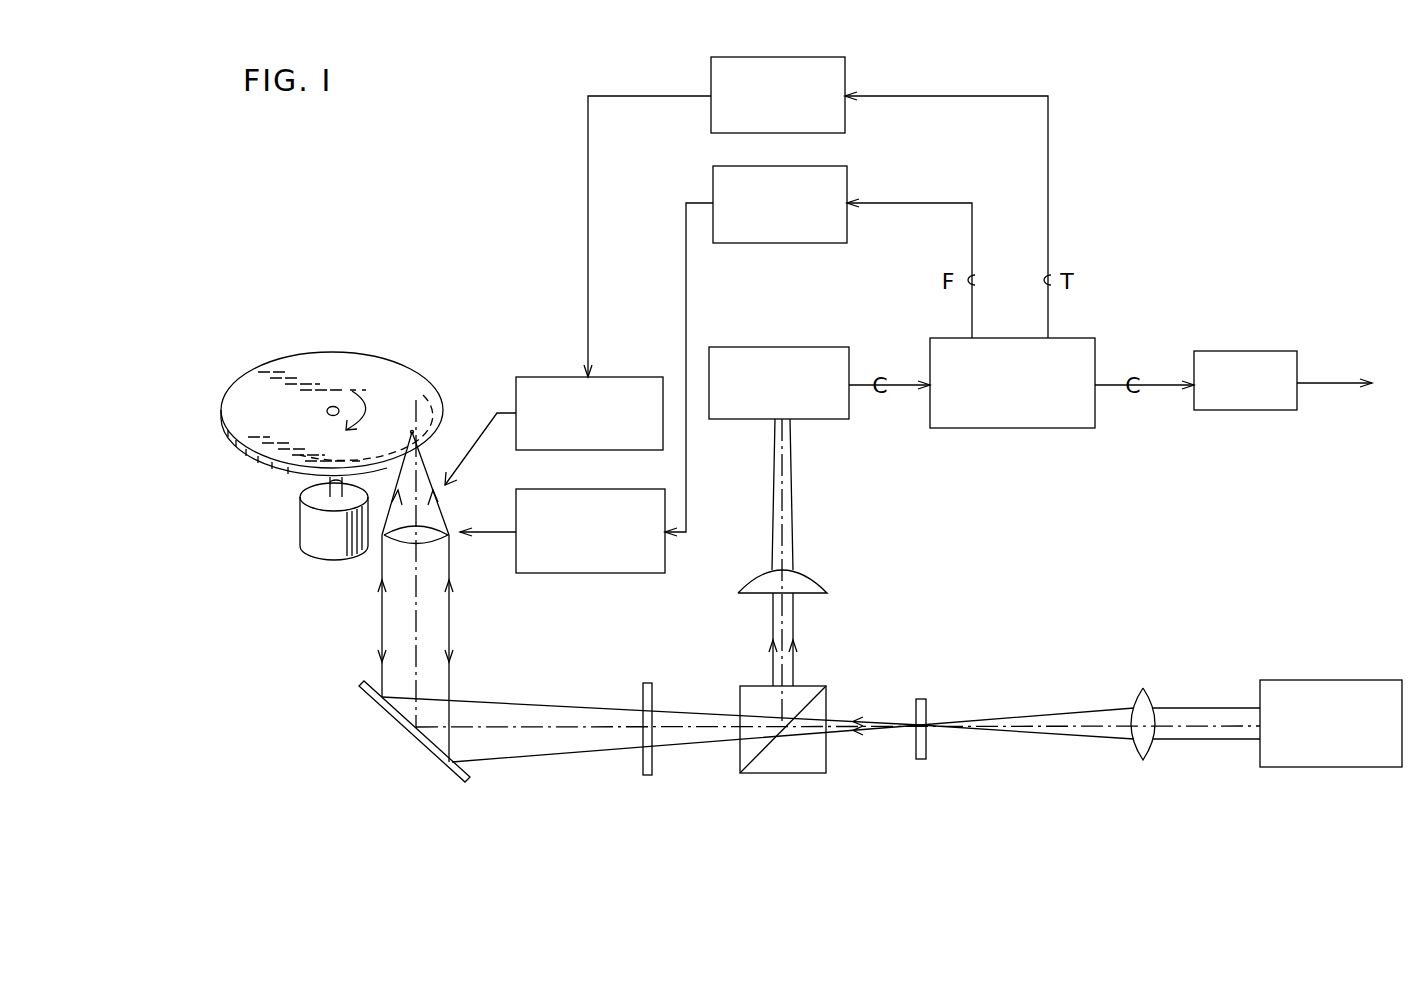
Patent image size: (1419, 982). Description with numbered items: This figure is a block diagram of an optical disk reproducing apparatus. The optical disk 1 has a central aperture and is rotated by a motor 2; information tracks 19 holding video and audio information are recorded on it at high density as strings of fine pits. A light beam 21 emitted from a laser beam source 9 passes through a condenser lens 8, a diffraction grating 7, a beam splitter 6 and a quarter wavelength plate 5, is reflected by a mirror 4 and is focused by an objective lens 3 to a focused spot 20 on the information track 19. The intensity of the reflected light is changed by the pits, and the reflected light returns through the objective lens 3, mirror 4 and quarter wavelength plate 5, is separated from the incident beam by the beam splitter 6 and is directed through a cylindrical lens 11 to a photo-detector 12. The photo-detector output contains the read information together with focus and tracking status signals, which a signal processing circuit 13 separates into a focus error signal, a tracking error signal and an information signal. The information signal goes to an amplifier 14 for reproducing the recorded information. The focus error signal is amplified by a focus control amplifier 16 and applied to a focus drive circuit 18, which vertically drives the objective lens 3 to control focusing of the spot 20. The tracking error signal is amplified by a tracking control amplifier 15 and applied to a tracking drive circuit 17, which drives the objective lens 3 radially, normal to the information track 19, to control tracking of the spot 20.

The optical disk 1 is at (394, 358).
The motor 2 is at (326, 560).
The objective lens 3 is at (446, 539).
The mirror 4 is at (429, 762).
The quarter wavelength plate 5 is at (648, 775).
The beam splitter 6 is at (786, 773).
The diffraction grating 7 is at (921, 759).
The condenser lens 8 is at (1139, 762).
The laser beam source 9 is at (1336, 767).
The cylindrical lens 11 is at (827, 581).
The photo-detector 12 is at (778, 347).
The signal processing circuit 13 is at (1010, 428).
The amplifier 14 is at (1243, 410).
The tracking control amplifier 15 is at (845, 68).
The focus control amplifier 16 is at (847, 168).
The tracking drive circuit 17 is at (620, 450).
The focus drive circuit 18 is at (588, 573).
The information track 19 is at (443, 405).
The focused spot 20 is at (412, 432).
The light beam 21 is at (1219, 740).